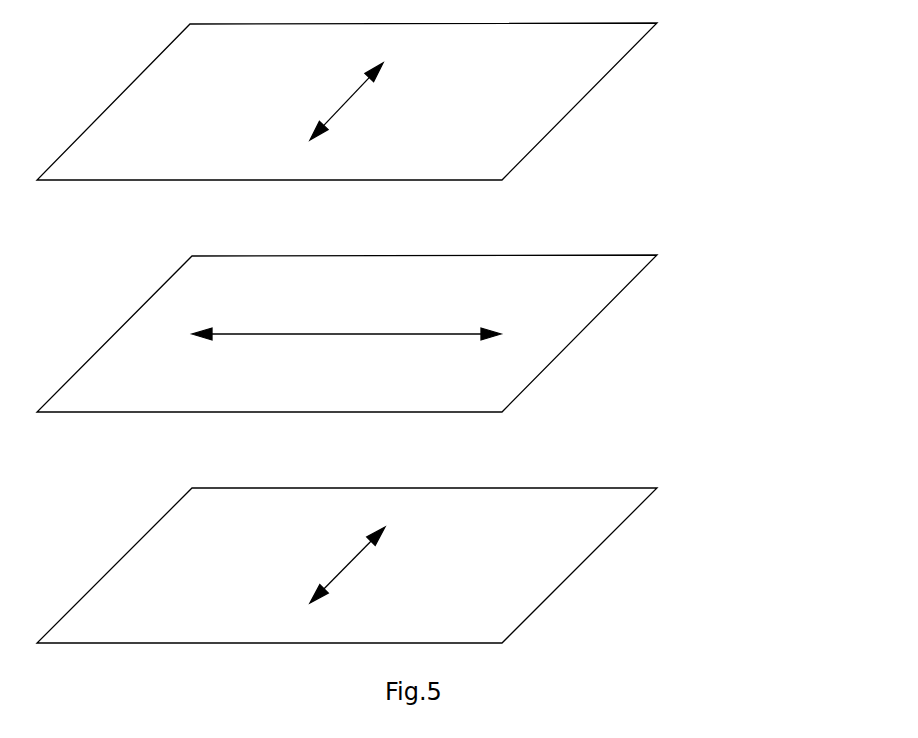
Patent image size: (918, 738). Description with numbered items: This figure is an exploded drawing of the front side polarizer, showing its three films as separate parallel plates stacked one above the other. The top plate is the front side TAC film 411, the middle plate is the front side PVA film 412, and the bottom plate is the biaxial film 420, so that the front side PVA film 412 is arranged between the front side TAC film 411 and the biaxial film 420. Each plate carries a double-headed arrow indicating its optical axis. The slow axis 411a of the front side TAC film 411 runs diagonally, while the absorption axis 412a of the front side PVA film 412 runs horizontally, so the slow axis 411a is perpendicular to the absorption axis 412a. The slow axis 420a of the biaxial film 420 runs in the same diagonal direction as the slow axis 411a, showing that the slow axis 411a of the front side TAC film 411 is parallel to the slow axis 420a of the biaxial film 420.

The front side TAC film 411 is at (627, 58).
The slow axis of the front side TAC film 411a is at (340, 107).
The front side PVA film 412 is at (620, 298).
The absorption axis of the front side PVA film 412a is at (423, 334).
The biaxial film 420 is at (608, 537).
The slow axis of the biaxial film 420a is at (332, 582).